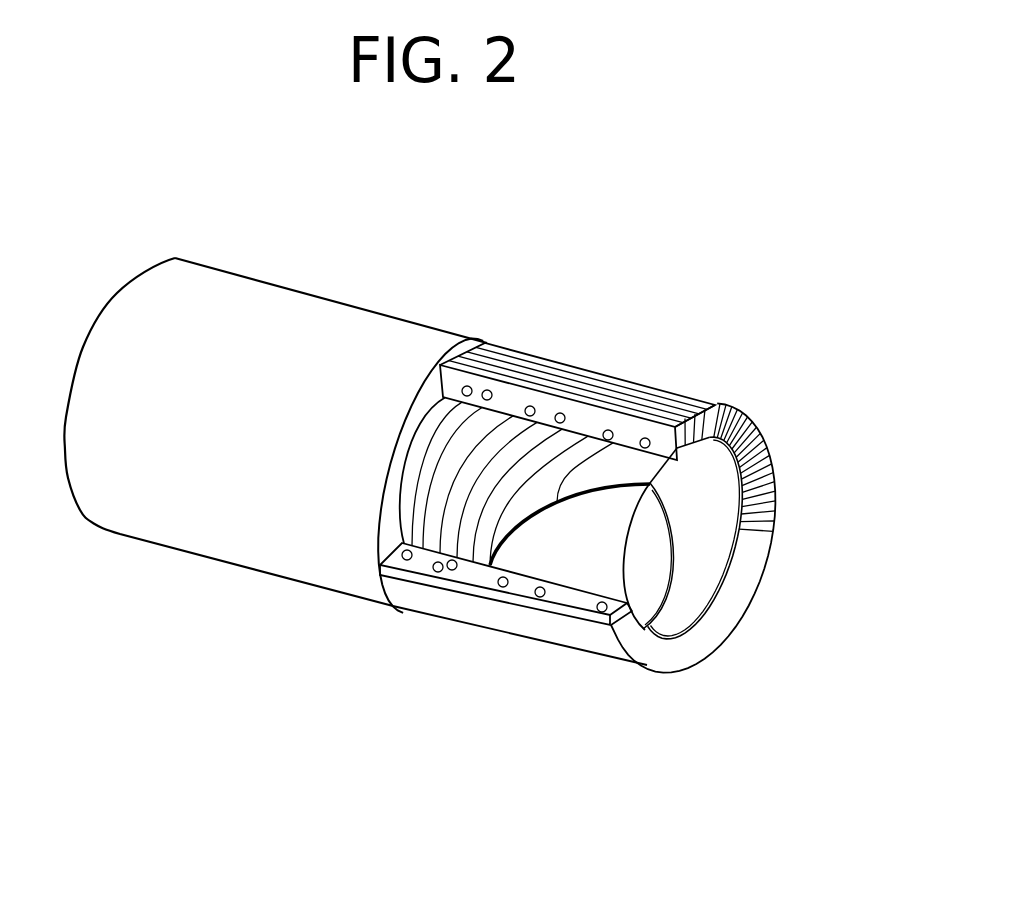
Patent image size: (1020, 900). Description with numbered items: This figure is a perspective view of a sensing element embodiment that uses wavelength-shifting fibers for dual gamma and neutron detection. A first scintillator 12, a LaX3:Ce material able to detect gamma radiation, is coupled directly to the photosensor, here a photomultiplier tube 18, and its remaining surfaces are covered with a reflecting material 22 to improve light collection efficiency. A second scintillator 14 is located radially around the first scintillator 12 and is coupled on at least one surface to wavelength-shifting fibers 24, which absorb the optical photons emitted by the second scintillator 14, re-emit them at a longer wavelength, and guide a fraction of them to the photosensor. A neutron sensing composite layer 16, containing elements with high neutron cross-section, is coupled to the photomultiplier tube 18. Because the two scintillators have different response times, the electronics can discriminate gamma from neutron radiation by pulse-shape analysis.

The first scintillator 12 is at (553, 547).
The second scintillator 14 is at (643, 450).
The neutron sensing composite layer 16 is at (392, 612).
The photomultiplier tube 18 is at (352, 337).
The reflecting material 22 is at (703, 547).
The wavelength-shifting fibers 24 is at (628, 457).